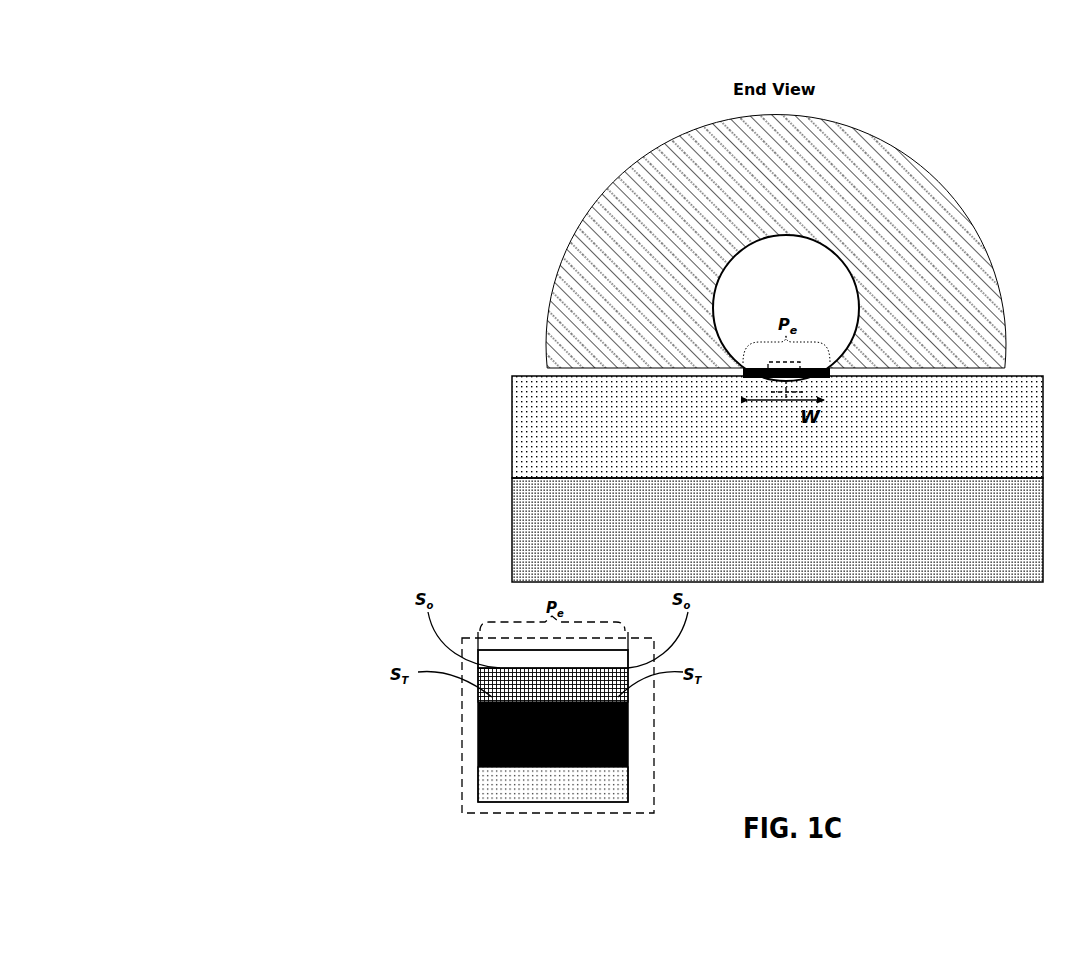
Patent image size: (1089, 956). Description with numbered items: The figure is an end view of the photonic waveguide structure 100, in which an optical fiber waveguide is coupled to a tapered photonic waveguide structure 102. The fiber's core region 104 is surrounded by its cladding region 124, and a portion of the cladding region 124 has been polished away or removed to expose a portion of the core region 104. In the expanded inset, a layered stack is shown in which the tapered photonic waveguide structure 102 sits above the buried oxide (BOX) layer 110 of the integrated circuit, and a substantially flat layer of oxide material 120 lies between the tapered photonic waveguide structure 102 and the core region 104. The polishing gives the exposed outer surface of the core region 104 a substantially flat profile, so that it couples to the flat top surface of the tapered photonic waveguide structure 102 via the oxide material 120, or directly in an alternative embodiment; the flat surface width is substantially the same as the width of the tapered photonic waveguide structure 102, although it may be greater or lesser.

The photonic waveguide structure 100 is at (257, 96).
The cladding region 124 is at (776, 241).
The core region 104 is at (508, 659).
The tapered photonic waveguide structure 102 is at (786, 380).
The oxide material 120 is at (553, 685).
The buried oxide (BOX) layer 110 is at (553, 784).